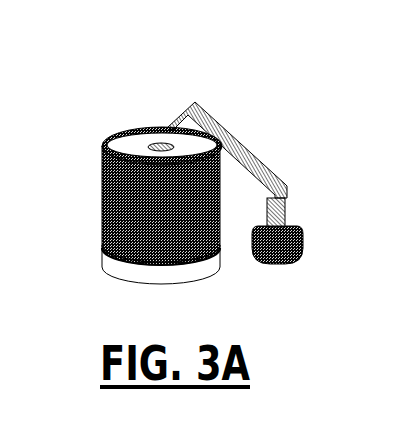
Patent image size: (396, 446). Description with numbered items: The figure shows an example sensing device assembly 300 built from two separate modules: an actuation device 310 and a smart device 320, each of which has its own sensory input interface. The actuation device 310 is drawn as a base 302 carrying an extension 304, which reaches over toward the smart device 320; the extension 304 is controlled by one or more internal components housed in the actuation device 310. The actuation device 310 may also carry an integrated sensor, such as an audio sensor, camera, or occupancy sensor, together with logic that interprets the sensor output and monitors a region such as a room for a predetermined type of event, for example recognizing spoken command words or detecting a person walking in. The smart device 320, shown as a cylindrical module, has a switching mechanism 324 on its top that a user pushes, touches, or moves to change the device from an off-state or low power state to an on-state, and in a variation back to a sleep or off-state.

The assembly 300 is at (221, 146).
The smart device 320 is at (98, 112).
The switching mechanism 324 is at (165, 145).
The extension 304 is at (247, 148).
The actuation device 310 is at (297, 158).
The base 302 is at (290, 243).